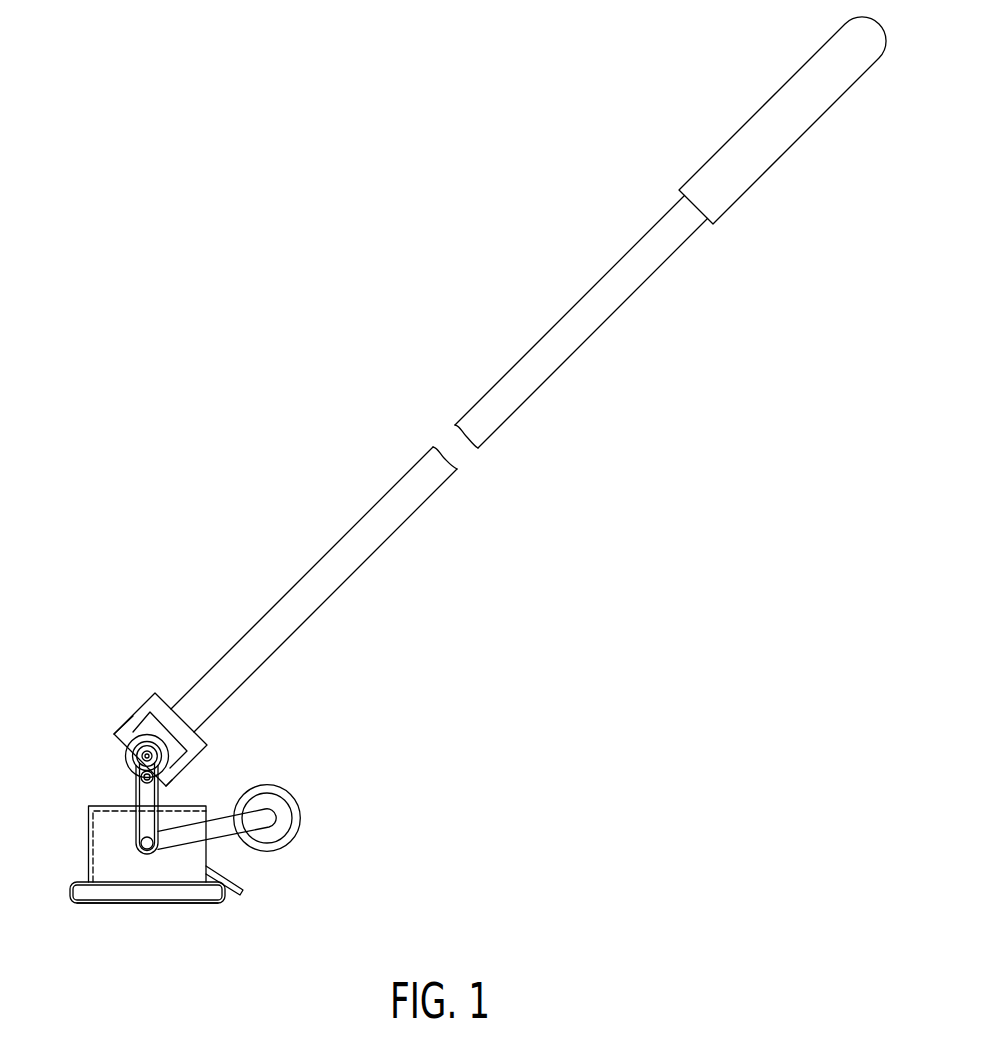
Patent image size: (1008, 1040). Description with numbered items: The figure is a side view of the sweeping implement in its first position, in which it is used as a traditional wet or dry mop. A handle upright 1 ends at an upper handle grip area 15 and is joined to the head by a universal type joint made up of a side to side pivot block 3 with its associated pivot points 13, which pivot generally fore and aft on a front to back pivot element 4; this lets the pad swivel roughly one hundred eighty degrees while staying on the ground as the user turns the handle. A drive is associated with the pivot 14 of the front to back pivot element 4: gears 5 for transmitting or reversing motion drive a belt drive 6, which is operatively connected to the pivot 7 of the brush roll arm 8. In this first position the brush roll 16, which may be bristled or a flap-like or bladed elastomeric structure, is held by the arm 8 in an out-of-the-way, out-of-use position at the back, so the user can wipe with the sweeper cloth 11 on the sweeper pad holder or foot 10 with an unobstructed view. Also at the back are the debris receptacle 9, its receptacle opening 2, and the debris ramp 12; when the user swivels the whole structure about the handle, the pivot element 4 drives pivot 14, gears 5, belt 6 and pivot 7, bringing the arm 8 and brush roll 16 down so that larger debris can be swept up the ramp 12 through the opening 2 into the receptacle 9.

The handle upright 1 is at (353, 552).
The receptacle opening 2 is at (207, 850).
The side to side pivot block 3 is at (205, 747).
The front to back pivot element 4 is at (128, 753).
The gears for transmitting motion and/or reversing motion 5 is at (140, 777).
The belt drive for transmitting motion and/or reversing motion 6 is at (137, 796).
The pivot of arm 7 is at (120, 862).
The brush roll arm 8 is at (262, 787).
The debris receptacle 9 is at (118, 868).
The sweeper pad holder/foot/block shaped structure/head 10 is at (110, 892).
The sweeper cloth 11 is at (175, 902).
The debris ramp 12 is at (243, 890).
The pivot of pivot block 13 is at (130, 737).
The pivot of front to back pivot element and of one gear 14 is at (201, 739).
The handle grip area 15 is at (770, 150).
The brush roll 16 is at (300, 817).